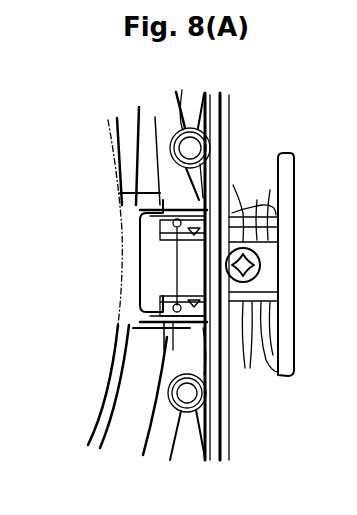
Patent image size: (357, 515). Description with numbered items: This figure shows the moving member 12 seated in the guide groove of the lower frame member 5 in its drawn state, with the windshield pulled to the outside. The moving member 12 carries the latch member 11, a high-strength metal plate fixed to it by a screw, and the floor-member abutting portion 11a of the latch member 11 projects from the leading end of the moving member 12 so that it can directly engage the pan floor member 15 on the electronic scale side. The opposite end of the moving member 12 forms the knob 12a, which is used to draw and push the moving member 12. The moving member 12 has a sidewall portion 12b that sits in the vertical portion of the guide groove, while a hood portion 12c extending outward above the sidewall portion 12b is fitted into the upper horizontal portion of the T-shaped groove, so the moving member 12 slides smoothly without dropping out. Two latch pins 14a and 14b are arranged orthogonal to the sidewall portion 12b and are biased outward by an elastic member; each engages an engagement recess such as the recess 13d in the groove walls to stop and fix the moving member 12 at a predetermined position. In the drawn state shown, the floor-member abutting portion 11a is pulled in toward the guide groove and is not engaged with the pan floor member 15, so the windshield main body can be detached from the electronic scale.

The lower frame member 5 is at (240, 73).
The pan floor member 15 is at (78, 131).
The latch member 11 is at (244, 216).
The floor-member abutting portion 11a is at (140, 292).
The moving member 12 is at (291, 158).
The knob 12a is at (294, 228).
The sidewall portion 12b is at (210, 213).
The hood portion 12c is at (264, 227).
The engagement recess 13d is at (114, 294).
The latch pin 14a is at (197, 322).
The latch pin 14b is at (200, 228).